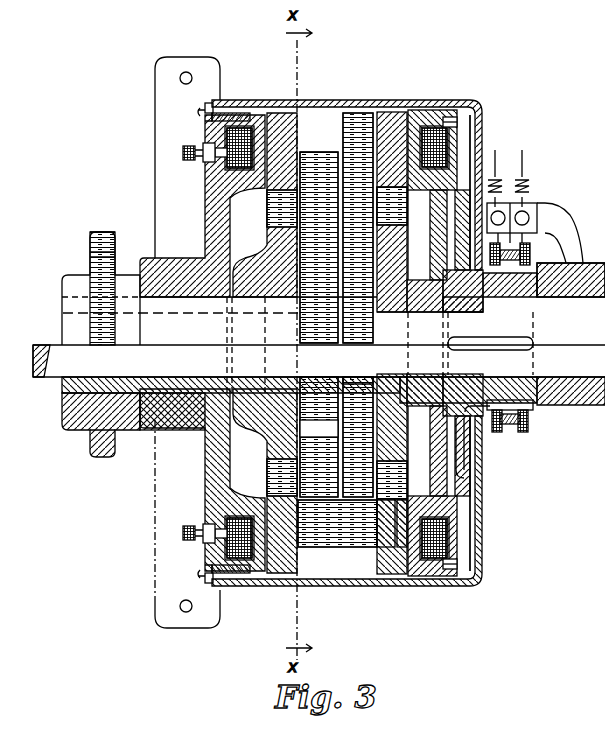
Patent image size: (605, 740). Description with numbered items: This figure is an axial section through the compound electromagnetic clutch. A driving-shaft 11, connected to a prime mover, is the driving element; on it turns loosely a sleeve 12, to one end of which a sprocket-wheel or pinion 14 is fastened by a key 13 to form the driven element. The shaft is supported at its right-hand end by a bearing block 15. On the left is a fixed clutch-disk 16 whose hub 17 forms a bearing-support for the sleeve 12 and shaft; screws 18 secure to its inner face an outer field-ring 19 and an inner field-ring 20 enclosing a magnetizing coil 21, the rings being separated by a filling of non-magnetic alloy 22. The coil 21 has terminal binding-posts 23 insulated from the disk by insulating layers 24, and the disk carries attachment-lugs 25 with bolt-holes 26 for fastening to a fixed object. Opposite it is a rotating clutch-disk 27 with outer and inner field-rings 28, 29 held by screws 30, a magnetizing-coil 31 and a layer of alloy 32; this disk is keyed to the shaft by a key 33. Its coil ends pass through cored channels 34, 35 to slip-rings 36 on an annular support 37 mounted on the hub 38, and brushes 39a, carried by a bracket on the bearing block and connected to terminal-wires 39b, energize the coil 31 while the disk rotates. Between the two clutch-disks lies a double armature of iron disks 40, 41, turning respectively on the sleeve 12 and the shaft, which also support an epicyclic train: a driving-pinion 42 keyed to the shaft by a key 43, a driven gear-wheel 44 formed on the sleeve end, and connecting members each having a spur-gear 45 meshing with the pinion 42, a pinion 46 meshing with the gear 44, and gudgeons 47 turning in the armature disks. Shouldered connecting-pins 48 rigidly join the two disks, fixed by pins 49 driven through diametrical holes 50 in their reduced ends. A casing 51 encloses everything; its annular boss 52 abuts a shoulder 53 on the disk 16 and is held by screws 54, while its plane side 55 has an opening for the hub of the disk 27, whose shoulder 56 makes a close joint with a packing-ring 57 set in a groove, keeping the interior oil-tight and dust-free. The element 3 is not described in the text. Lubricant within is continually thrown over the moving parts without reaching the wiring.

The conduit 3 is at (584, 258).
The driving-shaft 11 is at (52, 362).
The sleeve 12 is at (298, 345).
The key 13 is at (66, 398).
The sprocket-wheel or pinion 14 is at (70, 276).
The bearing block 15 is at (585, 405).
The clutch-disk 16 is at (214, 256).
The hub 17 is at (180, 440).
The screws 18 is at (212, 121).
The outer field-ring 19 is at (252, 128).
The inner field-ring 20 is at (246, 500).
The magnetizing coil 21 is at (222, 562).
The non-magnetic alloy 22 is at (254, 510).
The terminal binding-posts 23 is at (188, 162).
The insulating layers 24 is at (195, 528).
The attachment-lugs 25 is at (152, 62).
The bolt-hole 26 is at (186, 70).
The clutch-disk 27 is at (446, 262).
The outer field-ring 28 is at (414, 116).
The inner field-ring 29 is at (419, 487).
The screws 30 is at (468, 566).
The magnetizing-coil 31 is at (436, 128).
The layer of alloy 32 is at (419, 203).
The key 33 is at (490, 346).
The channel 34 is at (466, 488).
The channel 35 is at (446, 222).
The slip-rings 36 is at (518, 434).
The annular support 37 is at (530, 410).
The hub 38 is at (532, 378).
The brushes 39a is at (528, 228).
The terminal-wires 39b is at (524, 164).
The armature disk 40 is at (272, 446).
The armature disk 41 is at (419, 432).
The driving-pinion 42 is at (348, 334).
The key 43 is at (362, 380).
The driven gear-wheel 44 is at (316, 334).
The spur-gear 45 is at (346, 124).
The pinion 46 is at (310, 158).
The gudgeons 47 is at (272, 214).
The shouldered connecting-pins 48 is at (337, 523).
The pins 49 is at (278, 578).
The diametrical holes 50 is at (380, 518).
The casing 51 is at (345, 101).
The annular boss 52 is at (240, 112).
The shoulder 53 is at (204, 118).
The screws 54 is at (204, 108).
The plane side 55 is at (483, 142).
The shoulder 56 is at (492, 440).
The packing-ring 57 is at (527, 491).